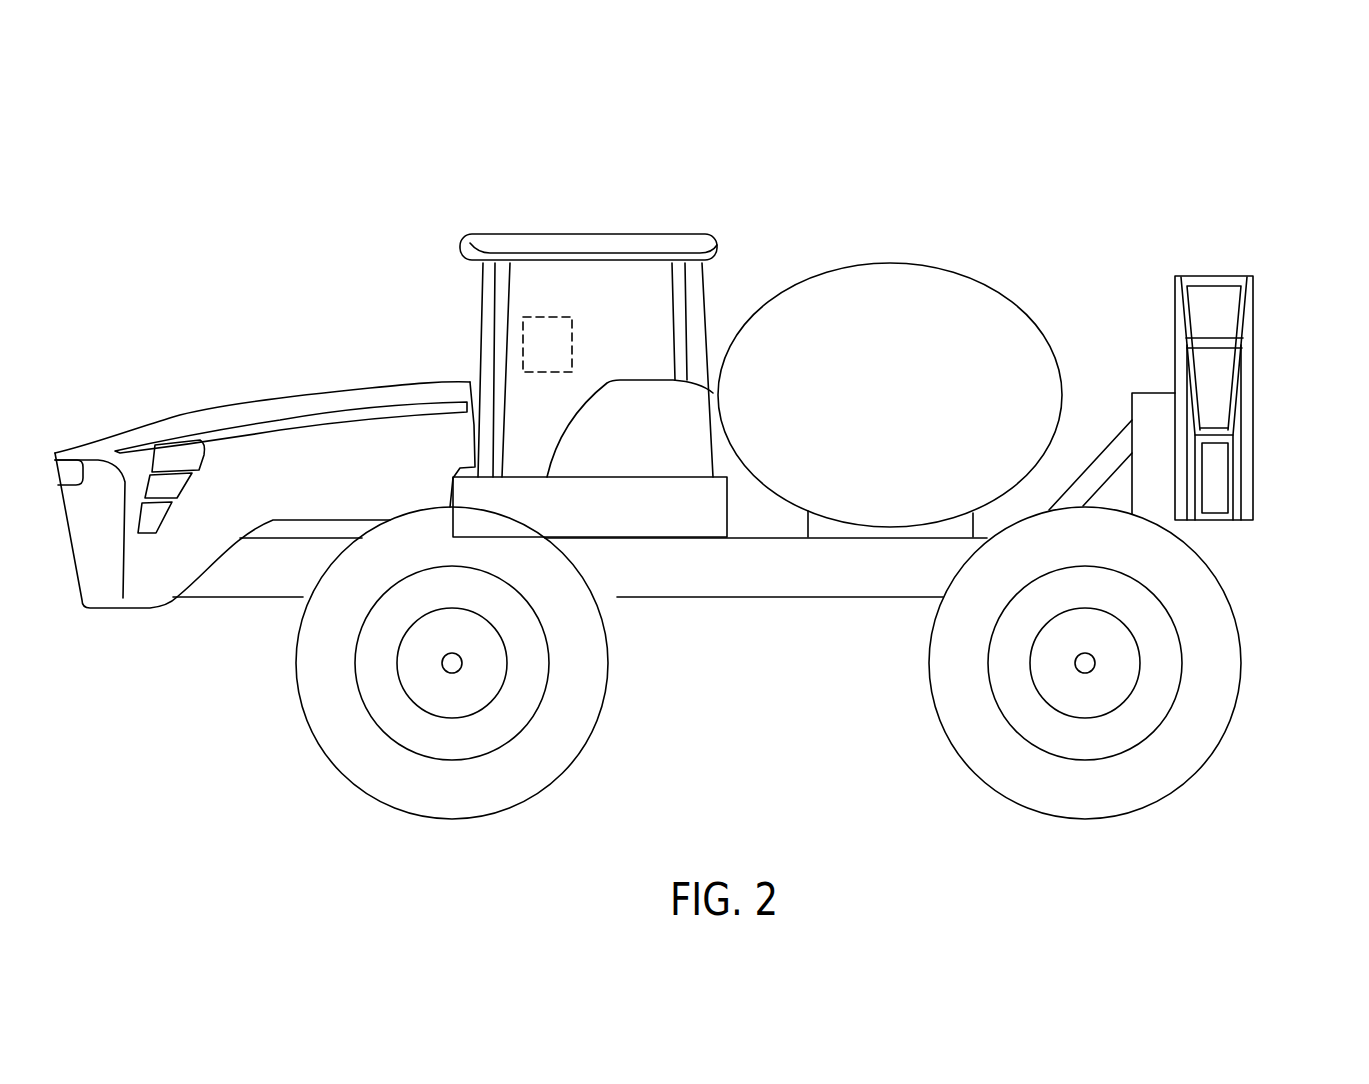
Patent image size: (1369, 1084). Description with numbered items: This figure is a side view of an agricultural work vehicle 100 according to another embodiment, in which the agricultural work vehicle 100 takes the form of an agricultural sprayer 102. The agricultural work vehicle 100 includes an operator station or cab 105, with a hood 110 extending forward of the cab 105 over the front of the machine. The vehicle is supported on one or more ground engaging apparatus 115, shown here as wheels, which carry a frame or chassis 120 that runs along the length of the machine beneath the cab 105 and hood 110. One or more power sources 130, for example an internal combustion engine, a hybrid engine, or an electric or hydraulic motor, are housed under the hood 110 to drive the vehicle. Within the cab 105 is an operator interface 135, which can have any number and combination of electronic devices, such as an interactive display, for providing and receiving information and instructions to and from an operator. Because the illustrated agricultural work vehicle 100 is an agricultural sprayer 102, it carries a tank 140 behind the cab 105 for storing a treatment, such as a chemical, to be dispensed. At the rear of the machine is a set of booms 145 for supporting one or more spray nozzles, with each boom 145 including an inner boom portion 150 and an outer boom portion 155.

The agricultural work vehicle 100 is at (775, 188).
The agricultural sprayer 102 is at (697, 180).
The cab 105 is at (610, 240).
The hood 110 is at (235, 415).
The ground engaging apparatus 115 is at (315, 705).
The chassis 120 is at (667, 583).
The power source 130 is at (353, 467).
The operator interface 135 is at (546, 328).
The tank 140 is at (867, 267).
The boom 145 is at (1132, 297).
The inner boom portion 150 is at (1248, 343).
The outer boom portion 155 is at (1217, 515).